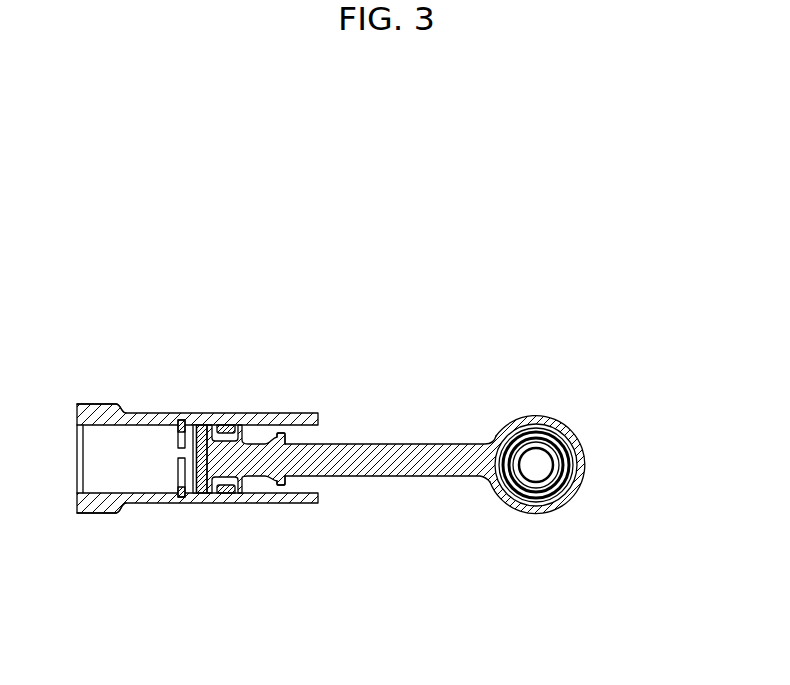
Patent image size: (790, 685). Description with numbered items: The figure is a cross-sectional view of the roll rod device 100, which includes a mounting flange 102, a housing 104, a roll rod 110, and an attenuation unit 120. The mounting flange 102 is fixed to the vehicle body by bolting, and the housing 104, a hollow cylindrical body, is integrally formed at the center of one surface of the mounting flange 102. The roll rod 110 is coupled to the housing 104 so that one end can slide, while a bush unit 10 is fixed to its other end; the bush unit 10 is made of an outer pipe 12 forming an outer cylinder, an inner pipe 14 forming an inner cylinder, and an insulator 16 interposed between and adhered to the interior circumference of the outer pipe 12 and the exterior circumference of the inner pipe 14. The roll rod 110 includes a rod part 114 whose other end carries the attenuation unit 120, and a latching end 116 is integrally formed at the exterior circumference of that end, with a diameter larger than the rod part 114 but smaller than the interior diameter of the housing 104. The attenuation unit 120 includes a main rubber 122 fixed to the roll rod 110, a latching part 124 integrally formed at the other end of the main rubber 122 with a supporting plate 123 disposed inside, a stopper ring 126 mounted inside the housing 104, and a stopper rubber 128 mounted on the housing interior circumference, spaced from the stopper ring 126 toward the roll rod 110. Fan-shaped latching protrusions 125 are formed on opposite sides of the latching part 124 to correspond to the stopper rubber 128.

The roll rod device 100 is at (367, 263).
The mounting flange 102 is at (93, 410).
The housing 104 is at (147, 420).
The roll rod 110 is at (478, 380).
The rod part 114 is at (407, 448).
The latching end 116 is at (283, 432).
The attenuation unit 120 is at (274, 500).
The main rubber 122 is at (250, 438).
The supporting plate 123 is at (202, 495).
The latching part 124 is at (178, 461).
The latching protrusion 125 is at (198, 420).
The stopper ring 126 is at (194, 494).
The stopper rubber 128 is at (229, 495).
The bush unit 10 is at (586, 462).
The outer pipe 12 is at (576, 488).
The inner pipe 14 is at (553, 463).
The insulator 16 is at (575, 438).